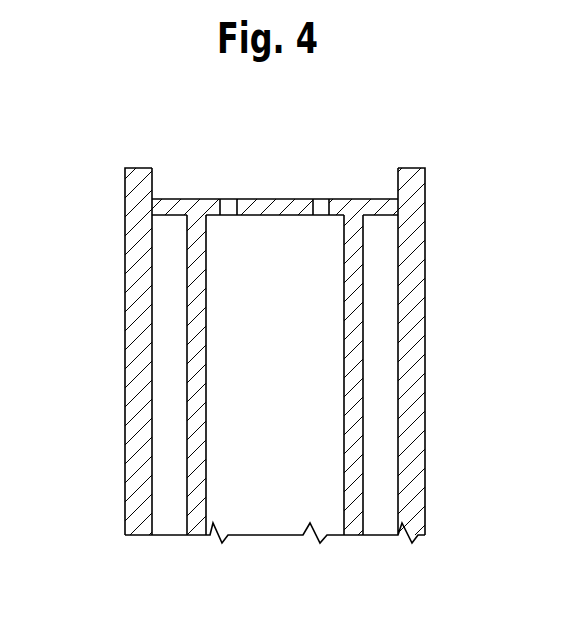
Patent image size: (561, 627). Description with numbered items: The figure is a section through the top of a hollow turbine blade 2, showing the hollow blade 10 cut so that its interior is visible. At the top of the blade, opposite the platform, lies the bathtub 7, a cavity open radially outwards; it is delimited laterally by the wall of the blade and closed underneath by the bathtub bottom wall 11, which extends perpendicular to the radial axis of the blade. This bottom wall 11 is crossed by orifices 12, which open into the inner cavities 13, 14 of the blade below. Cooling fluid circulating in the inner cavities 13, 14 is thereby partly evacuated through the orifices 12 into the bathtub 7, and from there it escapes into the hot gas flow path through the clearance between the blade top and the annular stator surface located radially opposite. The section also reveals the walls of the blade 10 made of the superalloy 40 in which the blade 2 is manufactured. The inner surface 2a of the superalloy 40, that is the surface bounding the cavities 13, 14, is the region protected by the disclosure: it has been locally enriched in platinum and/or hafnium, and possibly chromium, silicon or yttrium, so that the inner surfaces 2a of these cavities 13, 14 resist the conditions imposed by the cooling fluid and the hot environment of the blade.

The bathtub 7 is at (362, 150).
The hollow blade 2 is at (442, 322).
The inner surface 2a is at (207, 266).
The blade 10 is at (413, 453).
The bathtub bottom wall 11 is at (275, 198).
The orifices 12 is at (228, 198).
The inner cavity 13 is at (170, 451).
The inner cavity 14 is at (258, 475).
The superalloy 40 is at (197, 343).